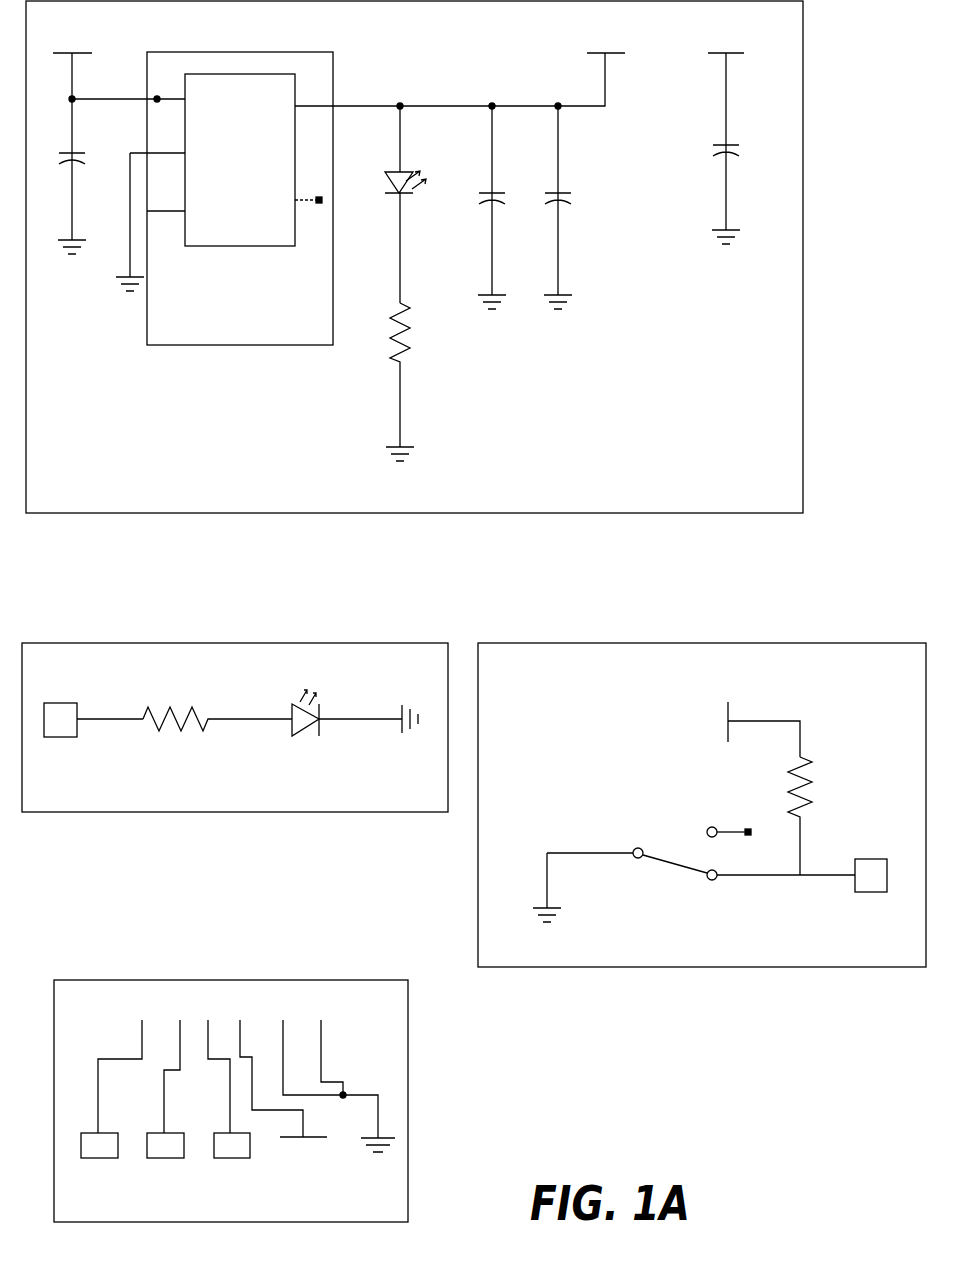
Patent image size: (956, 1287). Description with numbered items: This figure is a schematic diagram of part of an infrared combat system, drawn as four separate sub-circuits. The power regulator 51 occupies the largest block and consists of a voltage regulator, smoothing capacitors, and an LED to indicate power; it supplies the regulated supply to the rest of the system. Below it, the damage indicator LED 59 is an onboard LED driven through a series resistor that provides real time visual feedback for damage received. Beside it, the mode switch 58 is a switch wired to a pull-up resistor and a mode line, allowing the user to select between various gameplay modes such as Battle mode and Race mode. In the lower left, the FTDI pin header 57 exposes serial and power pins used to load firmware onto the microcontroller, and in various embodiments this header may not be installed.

The power regulator 51 is at (414, 257).
The damage indicator LED 59 is at (235, 727).
The mode switch 58 is at (702, 805).
The FTDI pin header 57 is at (231, 1101).